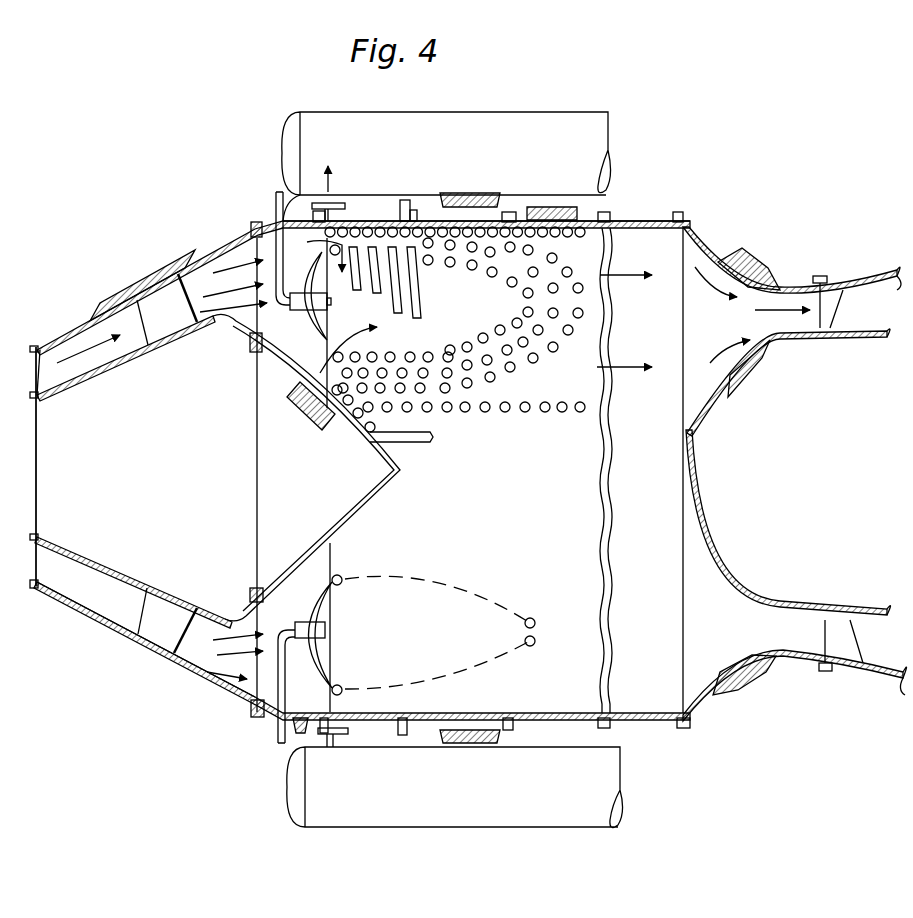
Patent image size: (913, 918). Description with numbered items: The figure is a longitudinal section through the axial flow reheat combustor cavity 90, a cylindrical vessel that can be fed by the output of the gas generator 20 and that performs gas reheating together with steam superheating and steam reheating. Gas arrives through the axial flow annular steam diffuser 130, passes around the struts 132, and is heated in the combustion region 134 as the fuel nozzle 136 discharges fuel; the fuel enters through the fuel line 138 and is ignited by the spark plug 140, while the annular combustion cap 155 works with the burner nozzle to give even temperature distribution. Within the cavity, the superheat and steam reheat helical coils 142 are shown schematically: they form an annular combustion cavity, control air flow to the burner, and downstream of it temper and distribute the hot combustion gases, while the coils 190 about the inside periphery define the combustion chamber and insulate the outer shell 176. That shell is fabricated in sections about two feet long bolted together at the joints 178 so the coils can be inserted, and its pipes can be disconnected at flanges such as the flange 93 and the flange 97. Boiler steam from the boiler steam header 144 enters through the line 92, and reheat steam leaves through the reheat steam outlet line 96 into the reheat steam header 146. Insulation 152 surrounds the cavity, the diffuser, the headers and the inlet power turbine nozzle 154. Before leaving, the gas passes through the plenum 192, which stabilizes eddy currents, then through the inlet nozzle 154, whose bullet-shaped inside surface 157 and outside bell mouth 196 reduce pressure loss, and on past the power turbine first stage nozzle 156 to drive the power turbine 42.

The gas generator 20 is at (37, 417).
The power turbine 42 is at (868, 342).
The cavity 90 is at (183, 695).
The line 92 is at (340, 738).
The flange 93 is at (325, 742).
The reheat steam outlet line 96 is at (338, 196).
The flange 97 is at (347, 203).
The axial flow annular steam diffuser 130 is at (63, 345).
The struts 132 is at (160, 330).
The combustion region 134 is at (262, 382).
The fuel nozzle 136 is at (257, 350).
The fuel line 138 is at (275, 206).
The spark plug 140 is at (283, 188).
The superheat and steam reheat helical coils 142 is at (532, 290).
The boiler steam header 144 is at (400, 810).
The reheat steam header 146 is at (470, 120).
The insulation 152 is at (148, 276).
The inlet power turbine nozzle 154 is at (762, 630).
The combustion cap 155 is at (253, 240).
The power turbine first stage nozzle 156 is at (832, 300).
The inside surface 157 is at (695, 507).
The outer shell 176 is at (624, 218).
The joints 178 is at (423, 200).
The coils 190 is at (452, 225).
The plenum 192 is at (717, 311).
The outside bell mouth 196 is at (875, 673).